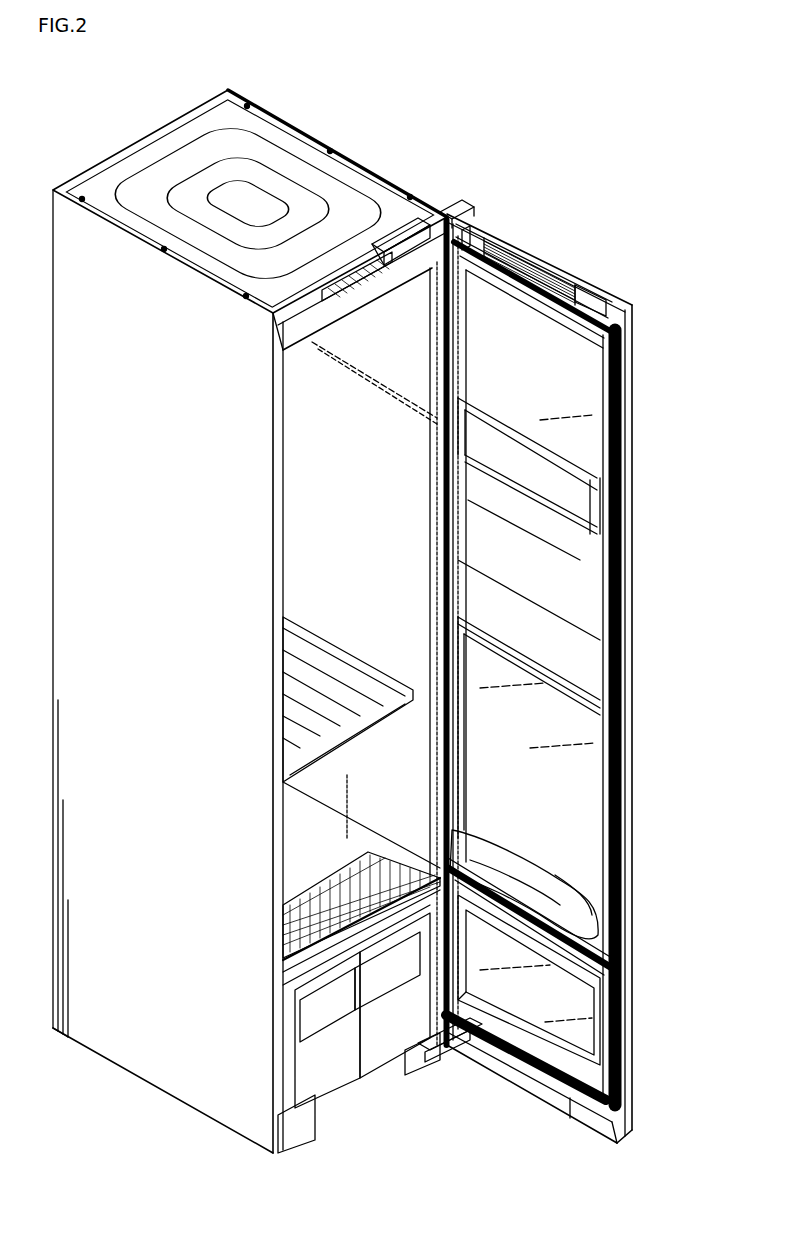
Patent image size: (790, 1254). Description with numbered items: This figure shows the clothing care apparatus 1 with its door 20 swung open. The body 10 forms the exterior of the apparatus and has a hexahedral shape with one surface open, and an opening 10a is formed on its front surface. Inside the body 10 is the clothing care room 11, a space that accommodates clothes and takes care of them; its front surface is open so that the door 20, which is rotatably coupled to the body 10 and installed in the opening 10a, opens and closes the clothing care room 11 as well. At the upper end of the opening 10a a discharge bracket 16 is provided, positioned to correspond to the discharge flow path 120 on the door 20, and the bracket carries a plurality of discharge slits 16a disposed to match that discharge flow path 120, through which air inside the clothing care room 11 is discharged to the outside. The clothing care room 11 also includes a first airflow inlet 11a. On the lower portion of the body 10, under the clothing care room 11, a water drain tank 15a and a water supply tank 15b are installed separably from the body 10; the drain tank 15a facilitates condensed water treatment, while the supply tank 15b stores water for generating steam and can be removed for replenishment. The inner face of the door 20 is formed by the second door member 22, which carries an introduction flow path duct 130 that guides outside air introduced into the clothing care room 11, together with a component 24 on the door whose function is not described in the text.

The clothing care apparatus 1 is at (489, 73).
The body 10 is at (312, 131).
The opening 10a is at (283, 458).
The clothing care room 11 is at (356, 556).
The first airflow inlet 11a is at (323, 900).
The water drain tank 15a is at (323, 1062).
The water supply tank 15b is at (375, 1042).
The discharge bracket 16 is at (390, 250).
The discharge slits 16a is at (368, 262).
The door 20 is at (593, 272).
The second door member 22 is at (568, 767).
The hook 24 is at (565, 895).
The discharge flow path 120 is at (528, 273).
The introduction flow path duct 130 is at (620, 948).